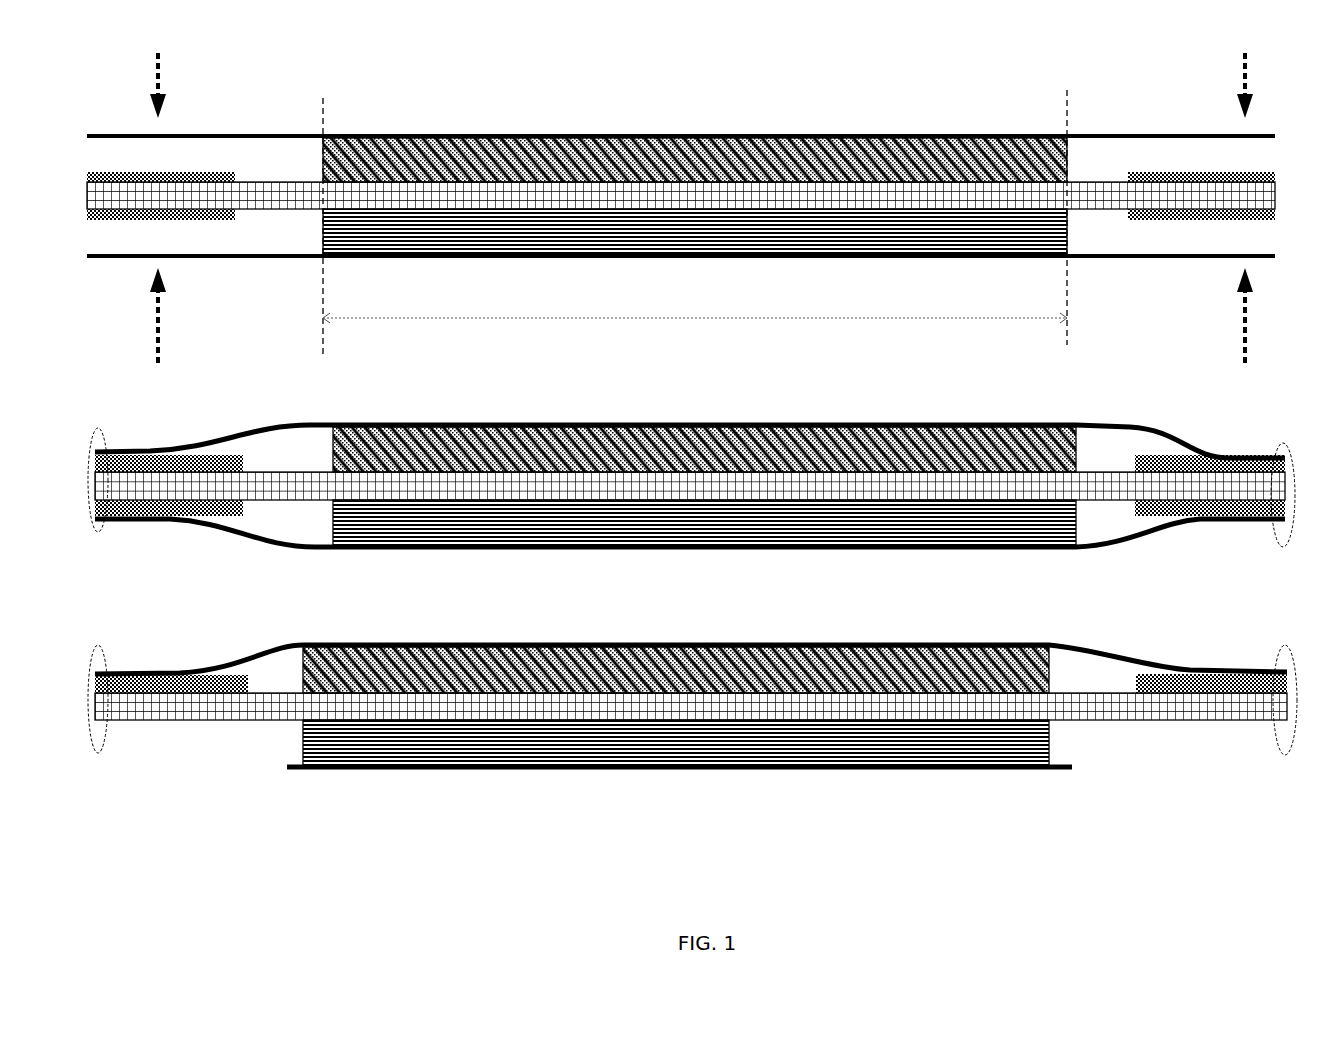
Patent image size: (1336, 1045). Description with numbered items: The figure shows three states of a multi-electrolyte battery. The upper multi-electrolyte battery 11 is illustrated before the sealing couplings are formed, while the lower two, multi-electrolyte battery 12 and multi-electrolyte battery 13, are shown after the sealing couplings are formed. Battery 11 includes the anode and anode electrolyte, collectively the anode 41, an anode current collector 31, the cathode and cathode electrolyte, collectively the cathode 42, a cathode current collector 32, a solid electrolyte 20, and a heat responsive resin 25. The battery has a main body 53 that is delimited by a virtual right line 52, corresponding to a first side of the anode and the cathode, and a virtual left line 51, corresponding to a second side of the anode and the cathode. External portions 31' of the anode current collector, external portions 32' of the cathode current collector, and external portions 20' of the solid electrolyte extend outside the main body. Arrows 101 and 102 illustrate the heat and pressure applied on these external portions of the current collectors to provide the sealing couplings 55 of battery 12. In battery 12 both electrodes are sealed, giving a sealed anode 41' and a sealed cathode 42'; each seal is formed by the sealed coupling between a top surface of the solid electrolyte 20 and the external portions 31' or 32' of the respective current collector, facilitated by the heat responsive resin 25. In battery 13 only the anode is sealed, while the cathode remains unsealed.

The multi-electrolyte battery 11 is at (632, 358).
The multi-electrolyte battery 12 is at (697, 585).
The multi-electrolyte battery 13 is at (690, 817).
The solid electrolyte 20 is at (1299, 146).
The external portions of the solid electrolyte 20' is at (696, 434).
The heat responsive resin 25 is at (235, 174).
The anode current collector 31 is at (691, 368).
The external portions of the anode current collector 31' is at (681, 110).
The cathode current collector 32 is at (690, 530).
The external portions of the cathode current collector 32' is at (681, 294).
The anode 41 is at (1107, 159).
The sealed anode 41' is at (286, 533).
The cathode 42 is at (689, 512).
The sealed cathode 42' is at (268, 548).
The virtual left line 51 is at (318, 240).
The virtual right line 52 is at (1063, 236).
The main body 53 is at (695, 326).
The sealing couplings 55 is at (98, 532).
The arrow 101 is at (699, 73).
The arrow 102 is at (701, 332).